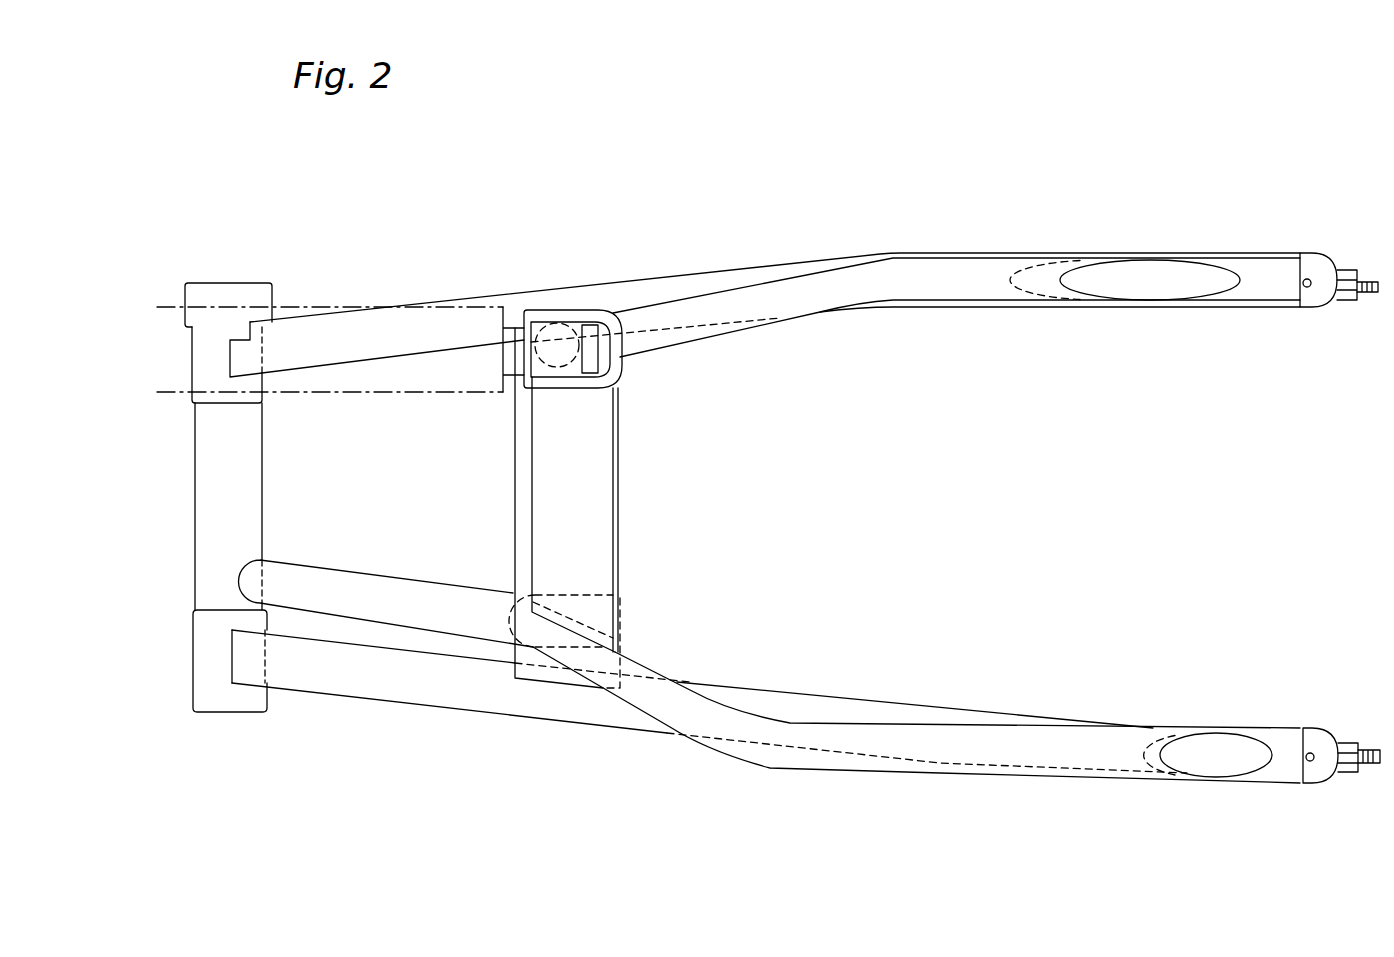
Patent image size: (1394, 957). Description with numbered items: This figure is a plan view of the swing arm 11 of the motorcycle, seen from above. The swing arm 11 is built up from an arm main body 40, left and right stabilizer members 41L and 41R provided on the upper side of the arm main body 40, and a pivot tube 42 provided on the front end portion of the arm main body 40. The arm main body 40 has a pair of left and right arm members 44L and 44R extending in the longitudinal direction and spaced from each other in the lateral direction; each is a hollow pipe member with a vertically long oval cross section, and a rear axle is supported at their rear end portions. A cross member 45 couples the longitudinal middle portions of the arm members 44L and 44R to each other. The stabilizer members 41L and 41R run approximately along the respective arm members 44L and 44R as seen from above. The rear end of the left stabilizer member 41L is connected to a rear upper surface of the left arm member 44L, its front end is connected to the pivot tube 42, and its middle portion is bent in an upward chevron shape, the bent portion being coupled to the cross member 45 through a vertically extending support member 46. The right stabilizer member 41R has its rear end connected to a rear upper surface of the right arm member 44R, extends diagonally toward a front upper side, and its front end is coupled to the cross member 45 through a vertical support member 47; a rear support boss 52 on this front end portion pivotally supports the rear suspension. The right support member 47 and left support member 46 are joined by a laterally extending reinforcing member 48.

The swing arm 11 is at (512, 205).
The arm main body 40 is at (732, 257).
The right stabilizer member 41R is at (948, 258).
The left stabilizer member 41L is at (757, 767).
The pivot tube 42 is at (207, 477).
The right arm member 44R is at (666, 278).
The left arm member 44L is at (440, 708).
The cross member 45 is at (515, 545).
The support member 46 is at (590, 595).
The support member 47 is at (577, 387).
The reinforcing member 48 is at (537, 480).
The rear support boss 52 is at (553, 310).